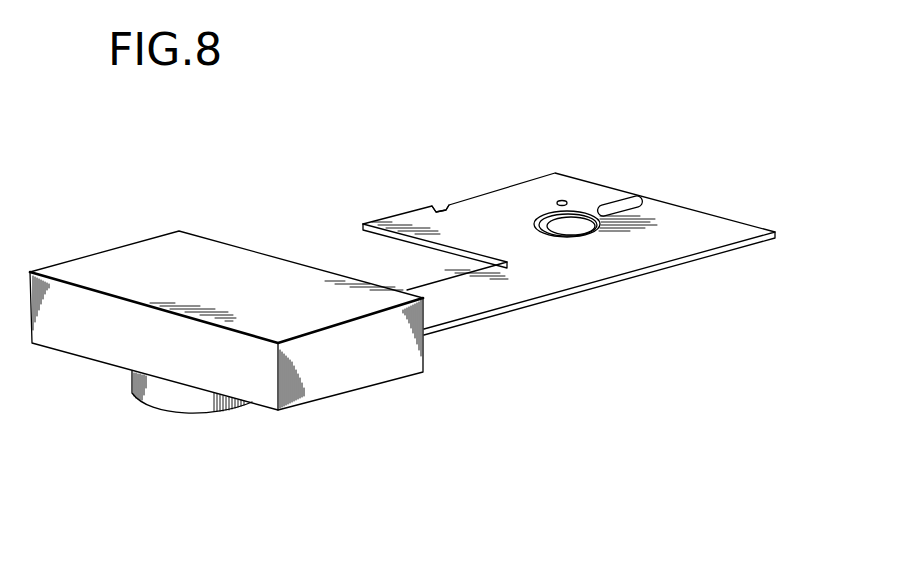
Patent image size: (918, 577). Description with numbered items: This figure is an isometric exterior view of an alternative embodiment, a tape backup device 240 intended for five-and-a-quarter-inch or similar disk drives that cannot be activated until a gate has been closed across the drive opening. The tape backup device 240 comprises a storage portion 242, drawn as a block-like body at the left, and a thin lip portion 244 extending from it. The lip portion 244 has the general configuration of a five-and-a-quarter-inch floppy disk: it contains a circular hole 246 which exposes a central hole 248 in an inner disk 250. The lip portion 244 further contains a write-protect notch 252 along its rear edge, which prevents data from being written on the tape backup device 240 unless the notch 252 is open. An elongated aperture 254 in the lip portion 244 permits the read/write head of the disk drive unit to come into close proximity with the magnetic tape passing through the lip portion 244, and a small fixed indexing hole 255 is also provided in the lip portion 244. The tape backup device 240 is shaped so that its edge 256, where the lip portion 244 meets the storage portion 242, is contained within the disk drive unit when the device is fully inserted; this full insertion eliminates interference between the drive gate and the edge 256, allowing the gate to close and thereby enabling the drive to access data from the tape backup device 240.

The tape backup device 240 is at (452, 362).
The storage portion 242 is at (138, 241).
The lip portion 244 is at (727, 245).
The circular hole 246 is at (543, 232).
The central hole 248 is at (575, 230).
The inner disk 250 is at (602, 227).
The write-protect notch 252 is at (435, 205).
The aperture 254 is at (628, 200).
The fixed indexing hole 255 is at (560, 201).
The edge 256 is at (392, 232).